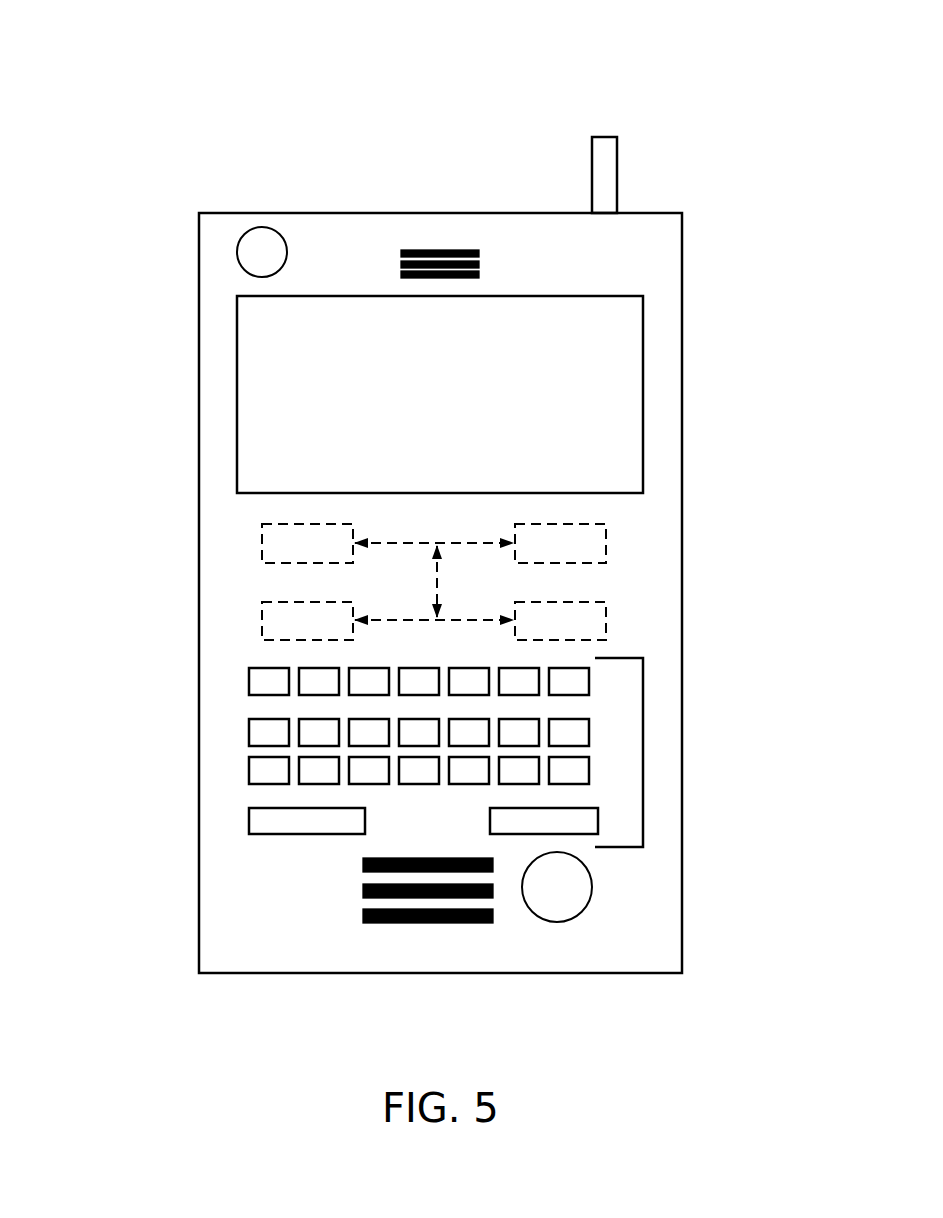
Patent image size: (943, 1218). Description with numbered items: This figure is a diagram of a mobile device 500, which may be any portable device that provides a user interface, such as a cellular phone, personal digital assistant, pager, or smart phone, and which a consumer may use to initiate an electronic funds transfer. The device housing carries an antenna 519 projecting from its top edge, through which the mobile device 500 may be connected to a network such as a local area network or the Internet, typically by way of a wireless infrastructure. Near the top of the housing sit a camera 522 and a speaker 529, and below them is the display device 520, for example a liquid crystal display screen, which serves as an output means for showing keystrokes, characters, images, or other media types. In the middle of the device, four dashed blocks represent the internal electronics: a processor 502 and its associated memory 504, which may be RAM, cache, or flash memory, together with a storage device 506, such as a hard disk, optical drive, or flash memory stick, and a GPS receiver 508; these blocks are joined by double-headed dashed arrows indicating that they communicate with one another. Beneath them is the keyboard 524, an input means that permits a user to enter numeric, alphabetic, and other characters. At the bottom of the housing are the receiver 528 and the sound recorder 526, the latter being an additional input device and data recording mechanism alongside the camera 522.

The mobile device 500 is at (502, 88).
The antenna 519 is at (607, 173).
The camera 522 is at (237, 250).
The speaker 529 is at (437, 248).
The display device 520 is at (618, 428).
The processor 502 is at (260, 542).
The storage device 506 is at (260, 620).
The GPS receiver 508 is at (608, 542).
The memory 504 is at (608, 620).
The keyboard 524 is at (645, 743).
The receiver 528 is at (428, 923).
The sound recorder 526 is at (558, 887).